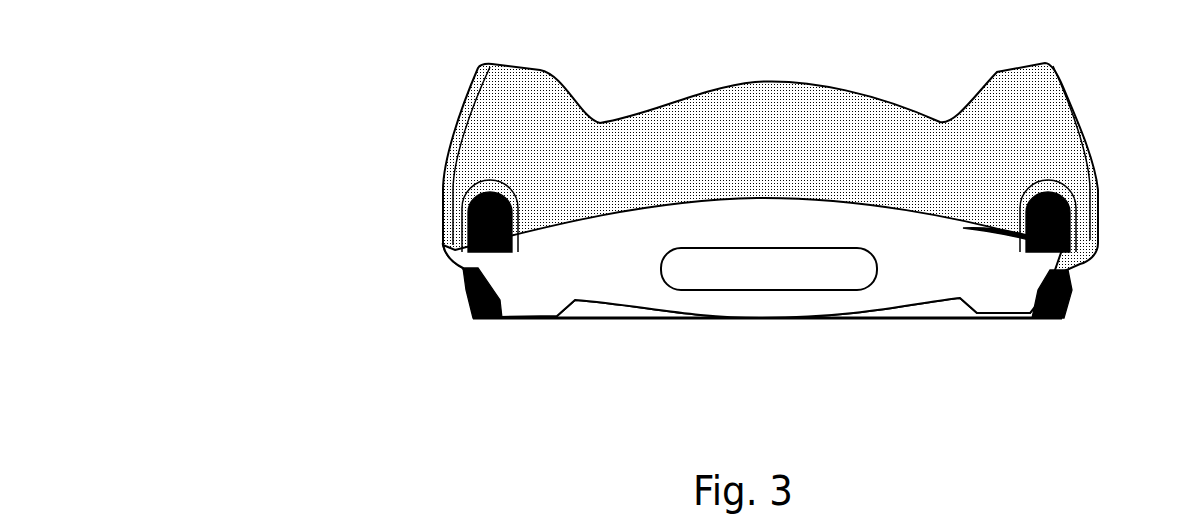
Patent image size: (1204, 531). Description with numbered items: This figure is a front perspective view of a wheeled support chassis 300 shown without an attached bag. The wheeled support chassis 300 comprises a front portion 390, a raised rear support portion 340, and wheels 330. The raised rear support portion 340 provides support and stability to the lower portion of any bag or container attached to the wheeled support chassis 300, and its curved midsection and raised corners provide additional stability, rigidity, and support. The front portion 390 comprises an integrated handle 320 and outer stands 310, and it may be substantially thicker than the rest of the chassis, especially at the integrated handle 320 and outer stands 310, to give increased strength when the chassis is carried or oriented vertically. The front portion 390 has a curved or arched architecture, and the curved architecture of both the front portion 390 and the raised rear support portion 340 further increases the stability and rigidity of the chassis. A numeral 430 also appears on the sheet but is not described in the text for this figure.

The wheeled support chassis 300 is at (356, 126).
The outer stands 310 is at (537, 292).
The integrated handle 320 is at (777, 290).
The wheels 330 is at (1067, 300).
The raised rear support portion 340 is at (830, 133).
The front portion 390 is at (618, 224).
The front end element 430 is at (892, 530).